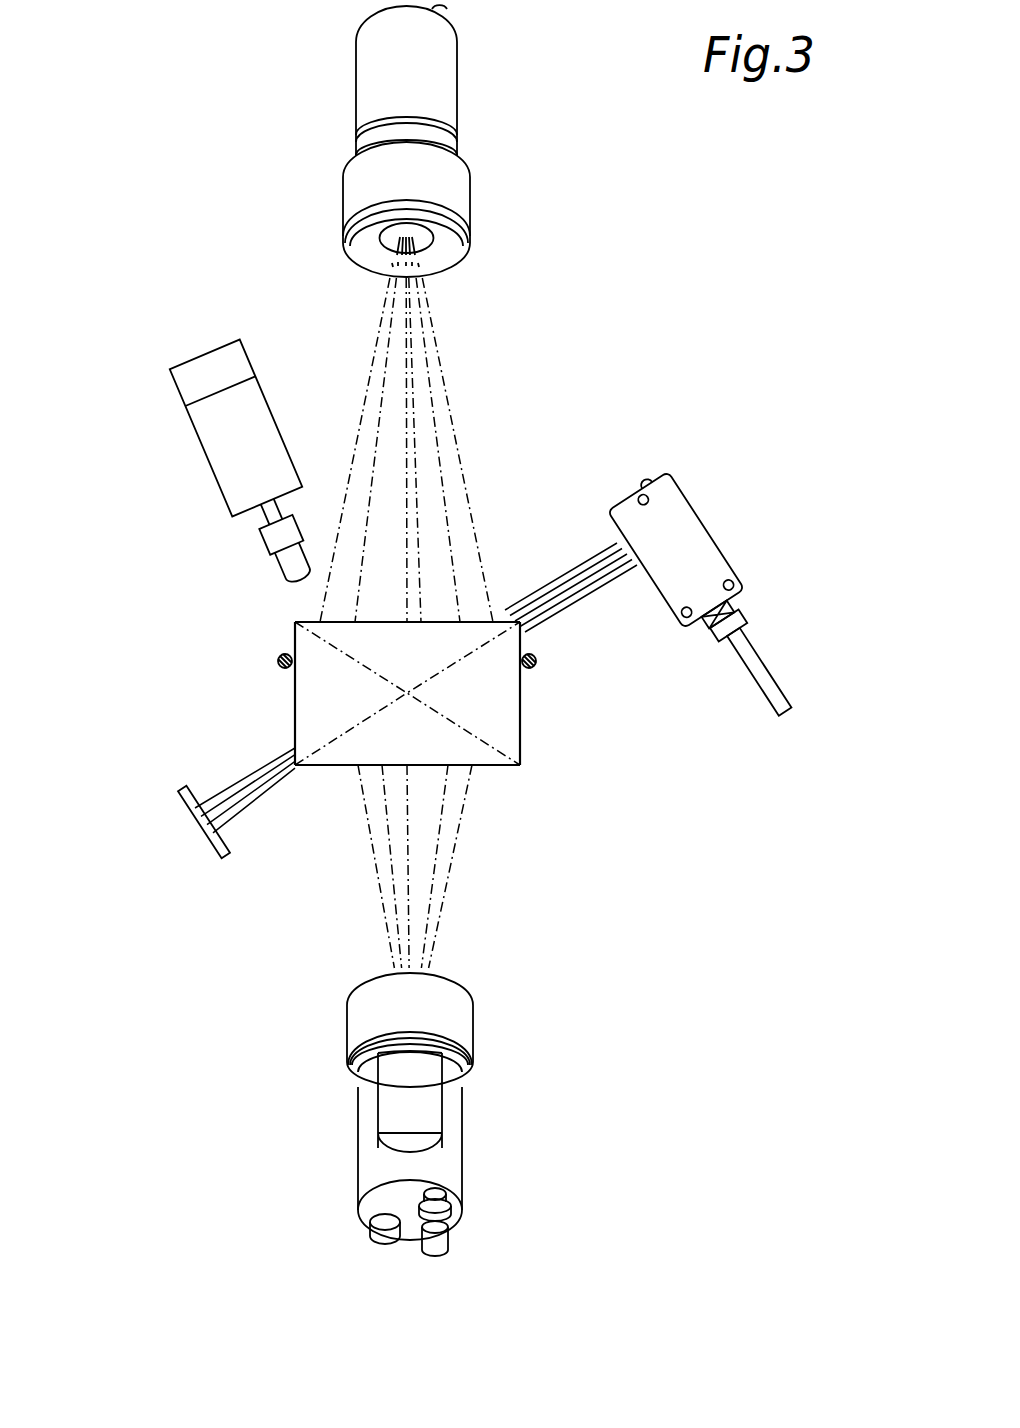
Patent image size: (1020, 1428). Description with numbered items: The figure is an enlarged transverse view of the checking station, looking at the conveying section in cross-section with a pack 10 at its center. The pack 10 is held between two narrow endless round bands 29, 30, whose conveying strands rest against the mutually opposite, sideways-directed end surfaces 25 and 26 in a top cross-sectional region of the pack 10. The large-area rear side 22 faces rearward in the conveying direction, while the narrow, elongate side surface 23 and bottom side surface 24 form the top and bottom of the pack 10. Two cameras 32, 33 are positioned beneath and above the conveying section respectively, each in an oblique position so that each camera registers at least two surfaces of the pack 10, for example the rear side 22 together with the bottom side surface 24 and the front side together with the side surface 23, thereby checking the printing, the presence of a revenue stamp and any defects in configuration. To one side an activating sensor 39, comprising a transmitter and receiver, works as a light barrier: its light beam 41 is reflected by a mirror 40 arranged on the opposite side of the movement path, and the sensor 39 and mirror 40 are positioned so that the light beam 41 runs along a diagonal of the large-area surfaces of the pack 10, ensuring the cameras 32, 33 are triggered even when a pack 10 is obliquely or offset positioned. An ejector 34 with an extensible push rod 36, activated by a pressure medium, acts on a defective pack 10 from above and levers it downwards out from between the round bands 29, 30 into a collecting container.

The pack 10 is at (523, 822).
The rear side 22 is at (436, 755).
The side surface 23 is at (387, 622).
The bottom side surface 24 is at (330, 768).
The end surface 25 is at (294, 710).
The end surface 26 is at (522, 740).
The round band 29 is at (283, 667).
The round band 30 is at (529, 668).
The camera 32 is at (407, 1103).
The camera 33 is at (377, 52).
The ejector 34 is at (199, 350).
The push rod 36 is at (296, 578).
The activating sensor 39 is at (683, 543).
The mirror 40 is at (186, 798).
The light beam 41 is at (562, 574).